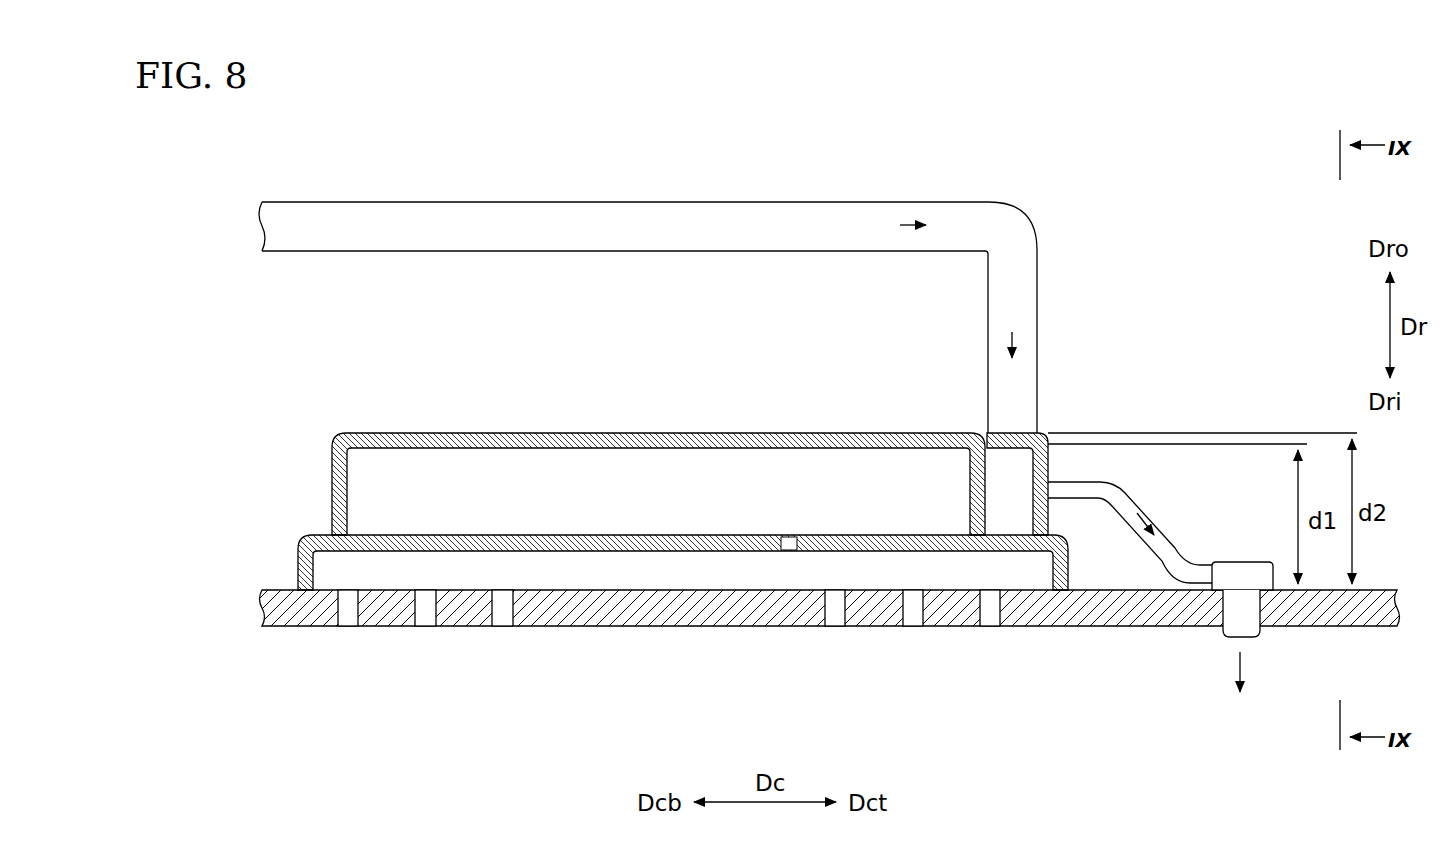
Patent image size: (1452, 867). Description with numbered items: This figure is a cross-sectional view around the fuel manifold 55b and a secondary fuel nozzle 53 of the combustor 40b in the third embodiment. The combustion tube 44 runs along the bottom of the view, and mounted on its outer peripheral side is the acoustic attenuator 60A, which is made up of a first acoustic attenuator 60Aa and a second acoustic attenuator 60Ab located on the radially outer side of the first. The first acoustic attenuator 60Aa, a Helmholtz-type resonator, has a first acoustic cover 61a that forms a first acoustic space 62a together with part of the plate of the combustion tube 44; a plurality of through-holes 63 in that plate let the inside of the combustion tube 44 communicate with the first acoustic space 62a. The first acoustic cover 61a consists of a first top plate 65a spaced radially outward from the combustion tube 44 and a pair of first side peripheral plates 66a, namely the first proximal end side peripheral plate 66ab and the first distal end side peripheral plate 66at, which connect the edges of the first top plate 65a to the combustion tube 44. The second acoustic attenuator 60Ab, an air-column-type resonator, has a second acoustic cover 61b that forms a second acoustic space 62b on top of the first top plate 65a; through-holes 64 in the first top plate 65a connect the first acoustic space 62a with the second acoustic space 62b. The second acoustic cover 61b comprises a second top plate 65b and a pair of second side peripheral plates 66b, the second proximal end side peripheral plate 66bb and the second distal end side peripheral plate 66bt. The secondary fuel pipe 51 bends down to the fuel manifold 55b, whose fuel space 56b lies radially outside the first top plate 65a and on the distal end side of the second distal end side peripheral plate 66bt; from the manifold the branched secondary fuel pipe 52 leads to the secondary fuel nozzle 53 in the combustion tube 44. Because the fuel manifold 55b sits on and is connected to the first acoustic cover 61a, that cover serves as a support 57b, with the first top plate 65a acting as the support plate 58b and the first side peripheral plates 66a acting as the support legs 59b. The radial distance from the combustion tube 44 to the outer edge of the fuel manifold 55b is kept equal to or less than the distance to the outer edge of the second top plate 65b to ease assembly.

The combustor 40b is at (1188, 184).
The secondary fuel pipe 51 is at (570, 213).
The branched secondary fuel pipe 52 is at (1140, 496).
The secondary fuel nozzle 53 is at (1238, 562).
The combustion tube 44 is at (830, 646).
The through-holes 63 is at (427, 615).
The first acoustic space 62a is at (608, 570).
The second acoustic space 62b is at (565, 487).
The through-holes 64 is at (787, 535).
The acoustic attenuator 60A is at (694, 543).
The first acoustic attenuator 60Aa is at (694, 550).
The second acoustic attenuator 60Ab is at (571, 439).
The first acoustic cover 61a is at (1169, 462).
The second acoustic cover 61b is at (383, 433).
The first top plate 65a is at (483, 445).
The second top plate 65b is at (652, 433).
The support plate 58b is at (490, 535).
The support 57b is at (1062, 535).
The support legs 59b is at (694, 550).
The first side peripheral plates 66a is at (694, 550).
The first proximal end side peripheral plate 66ab is at (297, 572).
The first distal end side peripheral plate 66at is at (1068, 563).
The second side peripheral plates 66b is at (571, 439).
The second proximal end side peripheral plate 66bb is at (315, 517).
The second distal end side peripheral plate 66bt is at (985, 497).
The fuel manifold 55b is at (1067, 439).
The fuel space 56b is at (1022, 485).